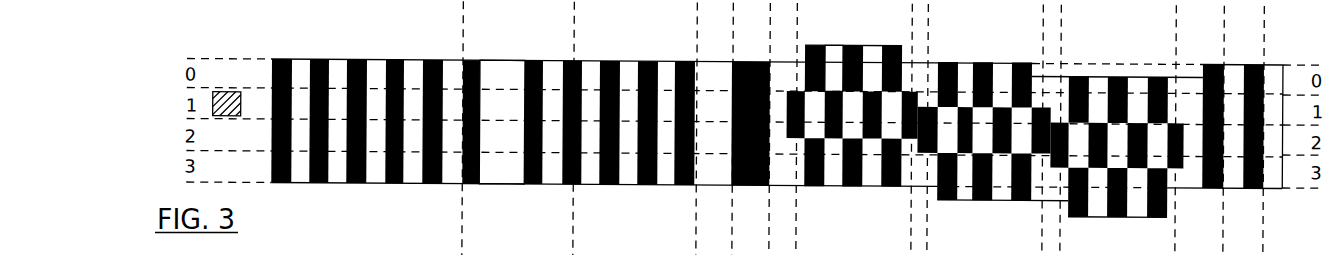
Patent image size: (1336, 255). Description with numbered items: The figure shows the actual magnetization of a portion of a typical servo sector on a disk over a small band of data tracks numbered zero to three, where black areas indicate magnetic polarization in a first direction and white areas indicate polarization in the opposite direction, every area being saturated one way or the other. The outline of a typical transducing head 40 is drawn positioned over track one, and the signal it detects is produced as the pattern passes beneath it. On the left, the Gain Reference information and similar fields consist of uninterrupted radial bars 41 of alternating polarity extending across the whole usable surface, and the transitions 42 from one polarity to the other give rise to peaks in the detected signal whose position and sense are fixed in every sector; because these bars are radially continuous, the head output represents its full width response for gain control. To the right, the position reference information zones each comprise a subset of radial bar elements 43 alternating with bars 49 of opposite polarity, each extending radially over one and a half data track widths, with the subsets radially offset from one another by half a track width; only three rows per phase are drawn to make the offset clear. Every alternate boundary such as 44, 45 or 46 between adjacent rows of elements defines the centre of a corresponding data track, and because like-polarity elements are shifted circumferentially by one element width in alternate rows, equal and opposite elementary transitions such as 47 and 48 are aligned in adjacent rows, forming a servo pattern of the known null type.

The transducing head 40 is at (236, 90).
The radial bars of alternating polarity 41 is at (607, 60).
The transitions 42 is at (632, 198).
The radial bar elements 43 is at (892, 15).
The boundary between adjacent rows of elements 44 is at (1049, 105).
The boundary between adjacent rows of elements 45 is at (805, 137).
The boundary between adjacent rows of elements 46 is at (1183, 164).
The elementary transition 47 is at (970, 74).
The elementary transition 48 is at (973, 131).
The bars of opposite polarity 49 is at (832, 42).